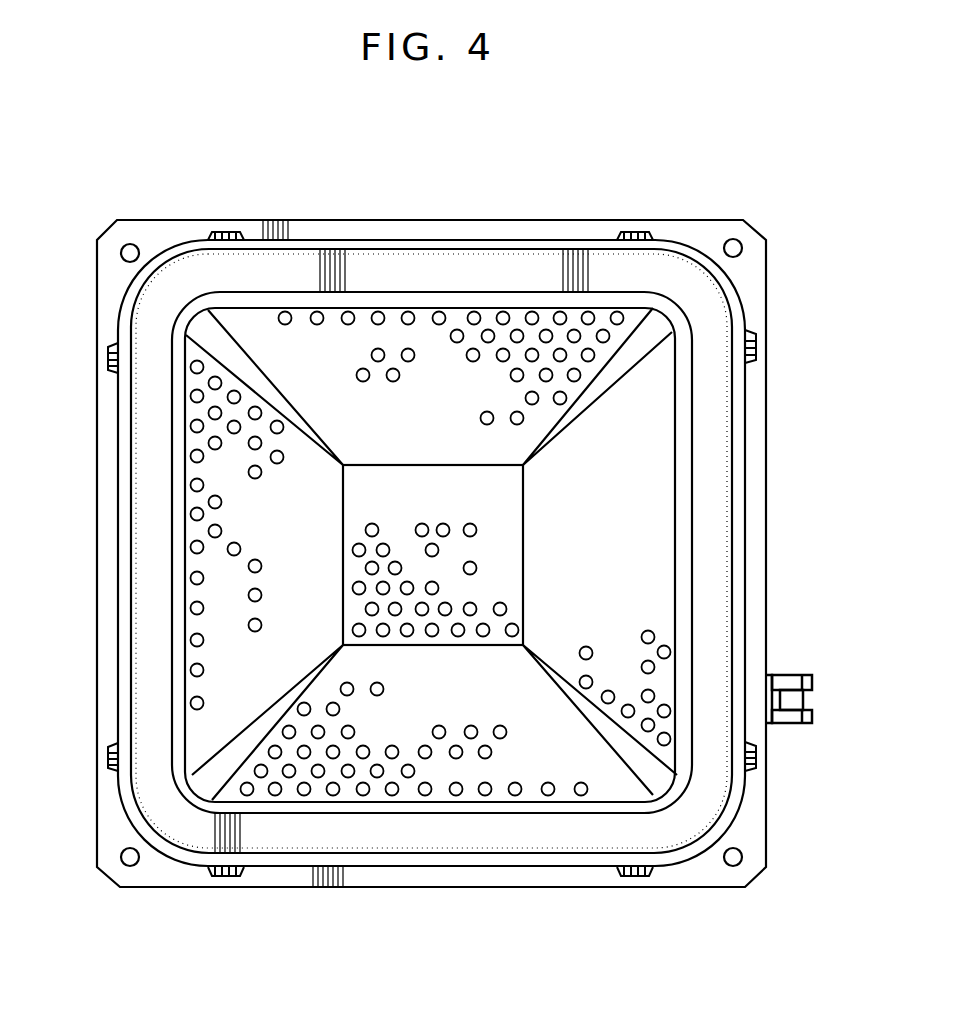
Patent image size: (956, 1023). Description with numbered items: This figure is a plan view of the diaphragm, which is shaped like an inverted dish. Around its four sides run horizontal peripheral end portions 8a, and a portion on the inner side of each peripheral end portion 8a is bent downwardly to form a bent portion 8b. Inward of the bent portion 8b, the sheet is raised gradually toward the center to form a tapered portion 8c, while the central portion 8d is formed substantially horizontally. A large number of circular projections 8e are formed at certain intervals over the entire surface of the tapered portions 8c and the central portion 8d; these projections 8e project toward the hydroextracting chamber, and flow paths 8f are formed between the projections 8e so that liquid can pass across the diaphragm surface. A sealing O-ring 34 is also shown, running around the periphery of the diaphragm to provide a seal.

The horizontal peripheral end portion 8a is at (588, 228).
The bent portion 8b is at (400, 298).
The tapered portion 8c is at (488, 317).
The central portion 8d is at (490, 505).
The circular projections 8e is at (422, 609).
The flow paths 8f is at (438, 795).
The sealing O-ring 34 is at (123, 543).